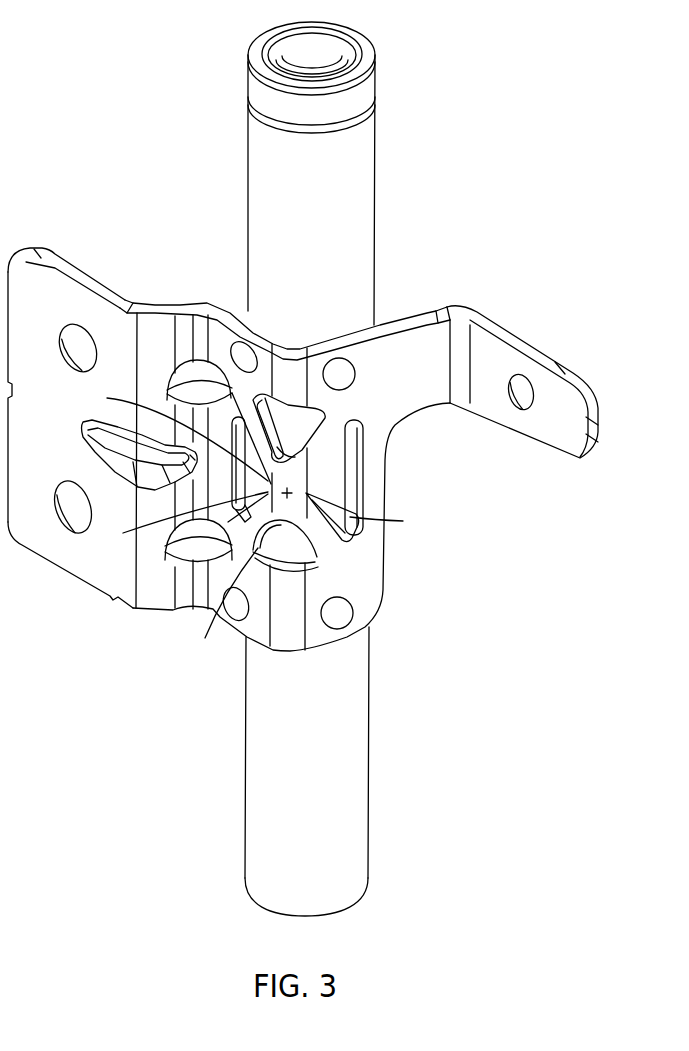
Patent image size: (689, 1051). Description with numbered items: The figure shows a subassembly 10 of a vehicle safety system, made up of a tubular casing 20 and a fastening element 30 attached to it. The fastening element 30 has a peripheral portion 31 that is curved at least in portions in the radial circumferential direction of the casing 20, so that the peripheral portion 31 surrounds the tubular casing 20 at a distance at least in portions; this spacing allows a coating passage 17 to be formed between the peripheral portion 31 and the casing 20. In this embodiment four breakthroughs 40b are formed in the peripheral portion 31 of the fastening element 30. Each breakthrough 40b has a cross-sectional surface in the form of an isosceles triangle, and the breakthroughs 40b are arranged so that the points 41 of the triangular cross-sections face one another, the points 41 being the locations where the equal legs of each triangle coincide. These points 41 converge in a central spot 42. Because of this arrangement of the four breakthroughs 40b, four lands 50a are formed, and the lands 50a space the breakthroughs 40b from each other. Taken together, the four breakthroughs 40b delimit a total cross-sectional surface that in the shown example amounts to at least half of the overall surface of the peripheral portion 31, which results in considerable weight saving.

The subassembly 10 is at (146, 52).
The tubular casing 20 is at (376, 183).
The fastening element 30 is at (303, 459).
The peripheral portion 31 is at (302, 358).
The coating passage 17 is at (276, 331).
The points 41 is at (255, 527).
The breakthroughs 40b is at (197, 393).
The lands 50a is at (197, 377).
The central spot 42 is at (304, 496).